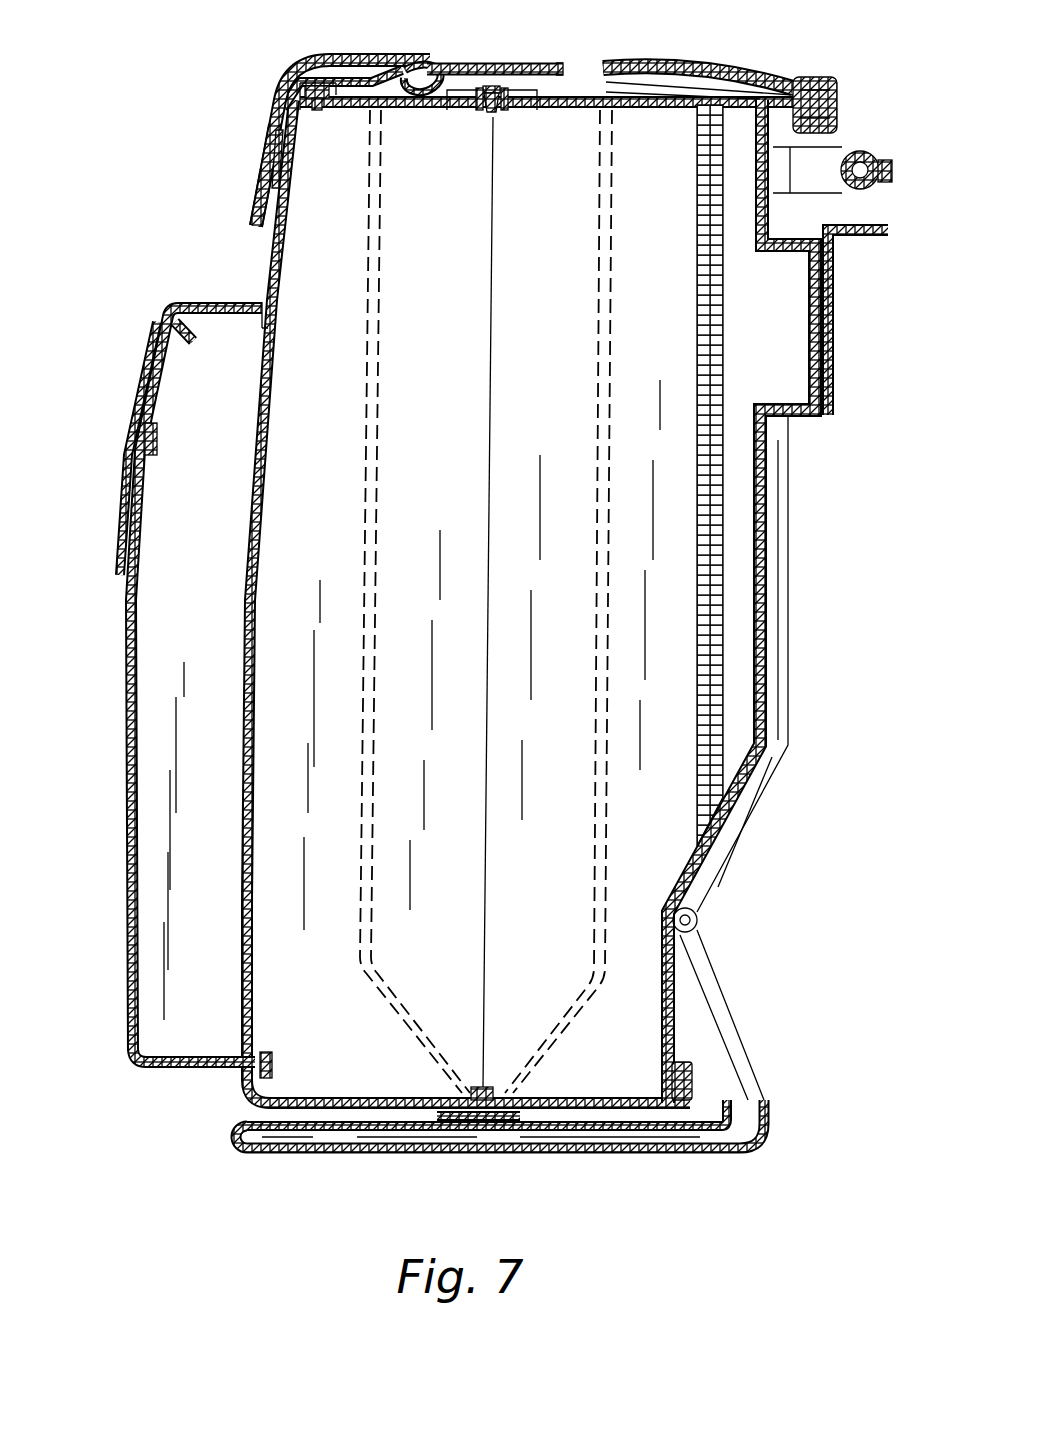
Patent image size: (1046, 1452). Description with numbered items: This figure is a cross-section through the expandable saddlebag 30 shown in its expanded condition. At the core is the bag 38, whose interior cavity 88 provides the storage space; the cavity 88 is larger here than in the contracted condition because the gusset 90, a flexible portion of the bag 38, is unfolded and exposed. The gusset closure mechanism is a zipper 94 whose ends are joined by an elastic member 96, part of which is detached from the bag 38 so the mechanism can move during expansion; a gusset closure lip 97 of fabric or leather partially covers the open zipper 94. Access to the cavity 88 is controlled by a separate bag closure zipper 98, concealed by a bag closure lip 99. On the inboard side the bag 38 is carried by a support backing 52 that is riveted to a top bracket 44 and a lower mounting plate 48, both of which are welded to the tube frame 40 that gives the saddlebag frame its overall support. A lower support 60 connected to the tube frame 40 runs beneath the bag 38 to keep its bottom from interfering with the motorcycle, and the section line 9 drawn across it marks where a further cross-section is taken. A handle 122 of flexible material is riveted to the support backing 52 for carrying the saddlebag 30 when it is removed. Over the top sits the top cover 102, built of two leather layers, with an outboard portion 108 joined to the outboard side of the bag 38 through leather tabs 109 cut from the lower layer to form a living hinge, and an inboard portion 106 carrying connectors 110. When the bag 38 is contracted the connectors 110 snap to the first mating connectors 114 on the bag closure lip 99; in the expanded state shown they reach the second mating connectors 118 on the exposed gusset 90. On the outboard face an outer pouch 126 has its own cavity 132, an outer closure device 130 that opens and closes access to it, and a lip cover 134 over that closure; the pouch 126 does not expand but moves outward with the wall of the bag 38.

The section line 9- 9 is at (615, 1135).
The expandable saddlebag 30 is at (214, 146).
The bag 38 is at (434, 601).
The tube frame 40 is at (790, 626).
The top bracket 44 is at (860, 238).
The lower mounting plate 48 is at (672, 985).
The support backing 52 is at (758, 524).
The lower support 60 is at (236, 1140).
The interior cavity 88 is at (268, 566).
The gusset 90 is at (582, 97).
The zipper 94 is at (380, 300).
The elastic member 96 is at (483, 1122).
The gusset closure lip 97 is at (411, 72).
The zipper 98 is at (715, 100).
The bag closure lip 99 is at (690, 59).
The top cover 102 is at (316, 115).
The inboard portion 106 is at (488, 62).
The outboard portion 108 is at (270, 115).
The leather tabs 109 is at (283, 192).
The connectors 110 is at (548, 65).
The first mating connectors 114 is at (758, 77).
The second mating connectors 118 is at (476, 105).
The handle 122 is at (858, 150).
The outer pouch 126 is at (128, 696).
The outer closure device 130 is at (158, 436).
The cavity 132 is at (178, 493).
The lip cover 134 is at (142, 388).